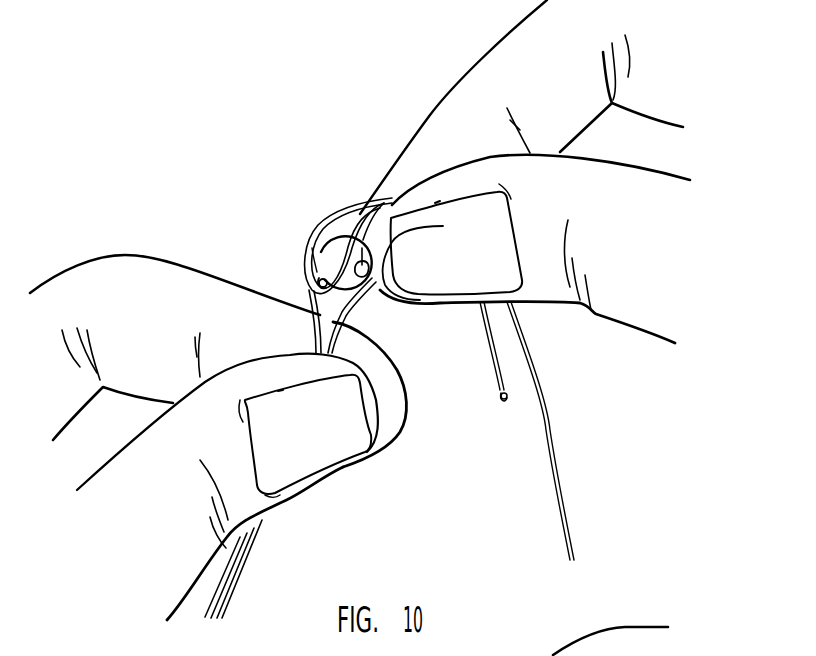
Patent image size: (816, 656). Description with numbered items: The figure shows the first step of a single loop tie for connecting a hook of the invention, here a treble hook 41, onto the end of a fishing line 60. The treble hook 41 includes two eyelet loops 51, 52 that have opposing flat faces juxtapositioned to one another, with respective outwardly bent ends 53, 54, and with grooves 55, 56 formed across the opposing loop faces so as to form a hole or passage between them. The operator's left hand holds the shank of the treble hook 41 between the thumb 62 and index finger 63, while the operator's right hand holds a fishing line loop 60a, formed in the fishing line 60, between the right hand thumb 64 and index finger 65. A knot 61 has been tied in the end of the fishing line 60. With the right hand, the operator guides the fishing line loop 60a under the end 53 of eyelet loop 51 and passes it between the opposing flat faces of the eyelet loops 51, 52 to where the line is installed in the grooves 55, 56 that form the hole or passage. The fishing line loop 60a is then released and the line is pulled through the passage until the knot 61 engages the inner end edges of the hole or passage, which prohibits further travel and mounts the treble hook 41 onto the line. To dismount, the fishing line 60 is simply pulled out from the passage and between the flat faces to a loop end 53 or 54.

The treble hook 41 is at (266, 548).
The eyelet loop 51 is at (322, 243).
The eyelet loop 52 is at (336, 233).
The outwardly bent end 53 is at (317, 273).
The outwardly bent end 54 is at (390, 280).
The groove 55 is at (425, 257).
The groove 56 is at (373, 212).
The fishing line 60 is at (548, 438).
The fishing line loop 60a is at (312, 248).
The knot 61 is at (498, 397).
The thumb 62 is at (159, 530).
The index finger 63 is at (149, 334).
The thumb 64 is at (656, 261).
The index finger 65 is at (551, 87).